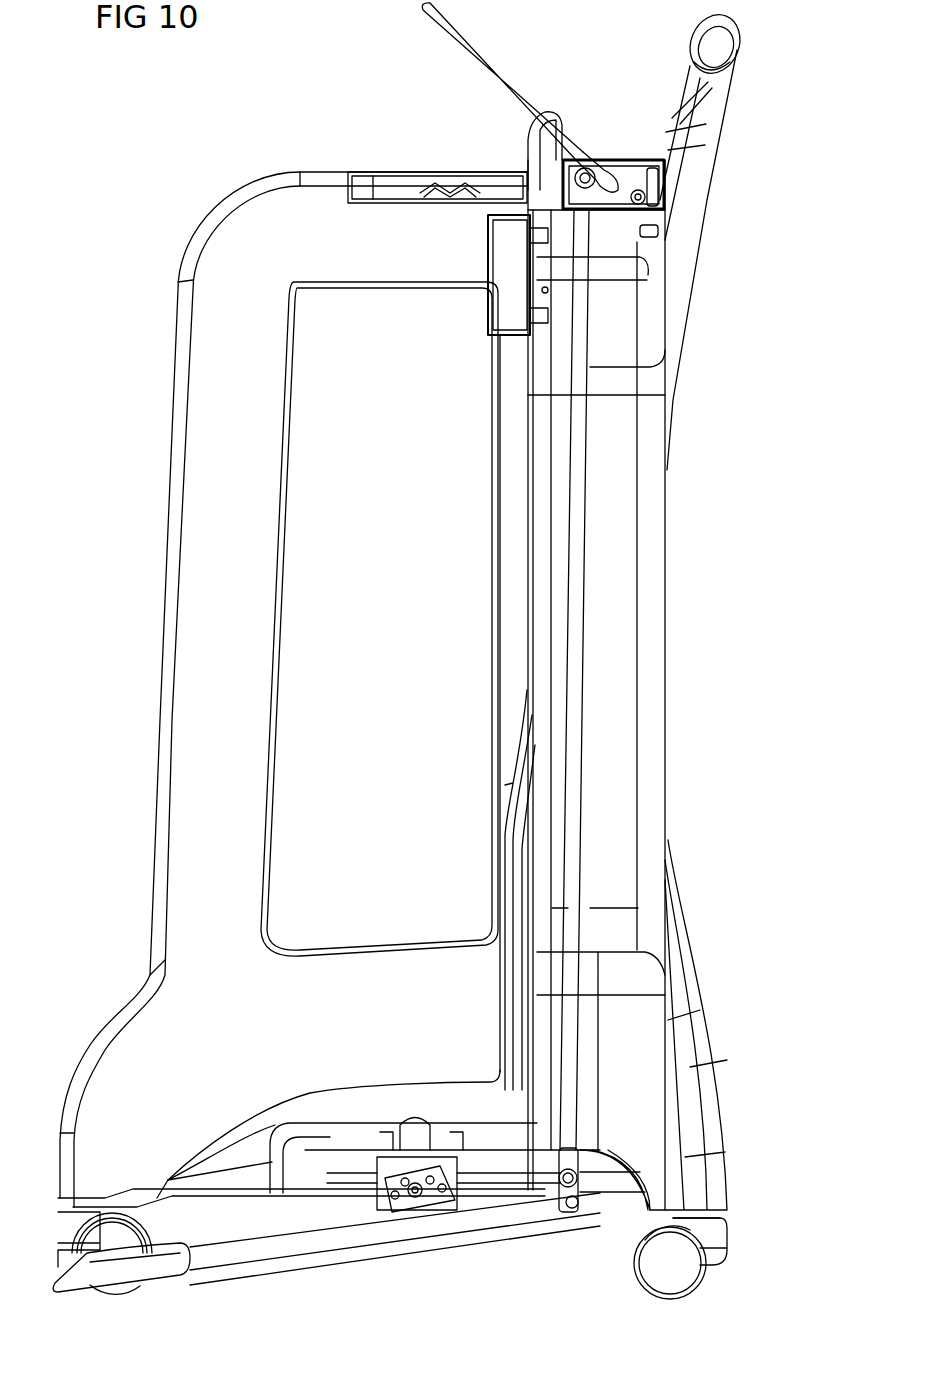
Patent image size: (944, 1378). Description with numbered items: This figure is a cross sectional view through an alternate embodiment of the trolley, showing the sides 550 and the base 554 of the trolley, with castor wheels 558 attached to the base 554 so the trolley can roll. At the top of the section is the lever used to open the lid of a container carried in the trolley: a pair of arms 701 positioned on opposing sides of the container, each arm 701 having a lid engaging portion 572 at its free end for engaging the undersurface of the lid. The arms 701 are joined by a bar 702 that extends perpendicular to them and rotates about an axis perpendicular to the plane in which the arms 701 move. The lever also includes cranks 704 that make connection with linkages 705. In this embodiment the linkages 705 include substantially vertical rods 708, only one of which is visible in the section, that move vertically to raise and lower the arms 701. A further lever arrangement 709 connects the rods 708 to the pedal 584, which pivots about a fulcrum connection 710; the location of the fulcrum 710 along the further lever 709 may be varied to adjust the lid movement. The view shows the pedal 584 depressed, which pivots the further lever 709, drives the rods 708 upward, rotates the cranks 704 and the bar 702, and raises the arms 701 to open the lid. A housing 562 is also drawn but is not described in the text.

The sides 550 is at (250, 185).
The base 554 is at (360, 1120).
The castor wheels 558 is at (103, 1240).
The latch housing 562 is at (513, 303).
The lid engaging portion 572 is at (423, 8).
The pedal 584 is at (153, 1258).
The arms 701 is at (478, 60).
The bar 702 is at (622, 205).
The cranks 704 is at (596, 175).
The linkages 705 is at (581, 517).
The vertical rods 708 is at (578, 566).
The further lever arrangement 709 is at (488, 1218).
The fulcrum connection 710 is at (390, 1206).